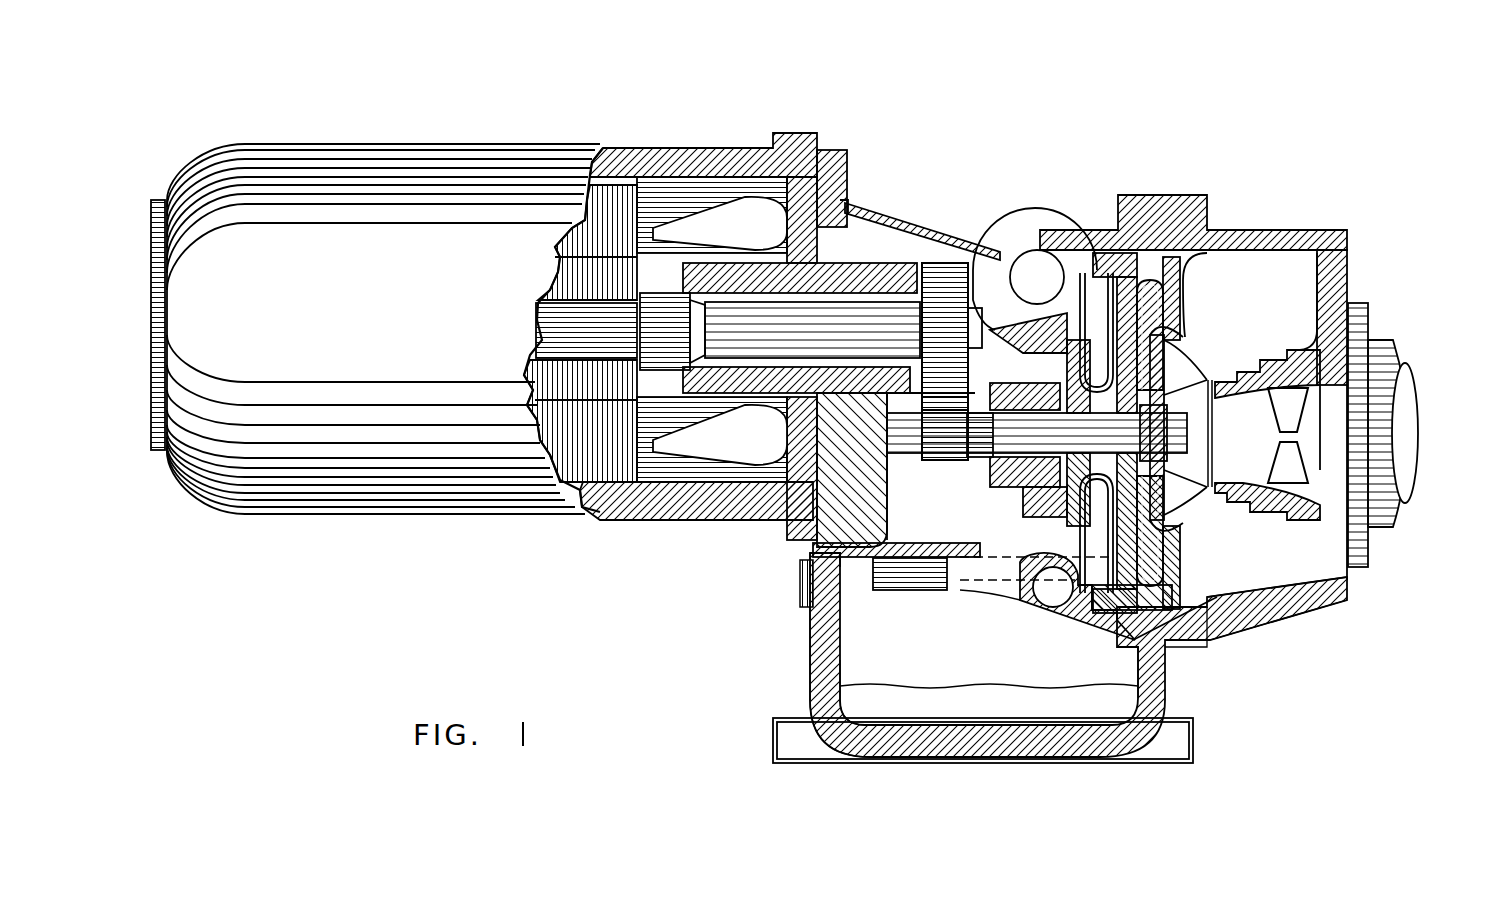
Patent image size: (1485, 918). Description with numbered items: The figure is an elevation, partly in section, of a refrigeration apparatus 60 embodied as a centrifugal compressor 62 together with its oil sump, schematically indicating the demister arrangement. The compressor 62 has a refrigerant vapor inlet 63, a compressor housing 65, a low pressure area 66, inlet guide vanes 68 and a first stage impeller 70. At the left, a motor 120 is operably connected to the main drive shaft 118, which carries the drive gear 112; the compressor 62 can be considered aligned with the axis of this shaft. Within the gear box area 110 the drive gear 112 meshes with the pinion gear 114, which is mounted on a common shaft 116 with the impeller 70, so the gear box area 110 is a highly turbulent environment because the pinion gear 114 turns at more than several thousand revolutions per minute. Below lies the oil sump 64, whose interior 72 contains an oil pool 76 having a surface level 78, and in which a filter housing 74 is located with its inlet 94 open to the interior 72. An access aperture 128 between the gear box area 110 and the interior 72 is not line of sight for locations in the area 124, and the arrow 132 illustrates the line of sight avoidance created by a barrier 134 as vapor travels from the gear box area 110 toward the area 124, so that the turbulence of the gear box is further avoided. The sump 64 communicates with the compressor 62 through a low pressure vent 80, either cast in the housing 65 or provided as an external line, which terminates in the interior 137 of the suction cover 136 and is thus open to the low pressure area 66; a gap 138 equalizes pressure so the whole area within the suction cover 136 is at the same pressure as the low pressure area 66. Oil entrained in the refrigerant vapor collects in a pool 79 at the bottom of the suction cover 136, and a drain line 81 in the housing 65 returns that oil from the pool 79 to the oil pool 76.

The refrigeration apparatus 60 is at (1420, 246).
The centrifugal compressor 62 is at (1272, 222).
The refrigerant vapor inlet 63 is at (1423, 372).
The oil sump 64 is at (808, 635).
The compressor housing 65 is at (1175, 675).
The low pressure area 66 is at (1258, 458).
The inlet guide vanes 68 is at (1310, 457).
The first stage impeller 70 is at (1185, 337).
The interior of the oil sump 72 is at (873, 672).
The filter housing 74 is at (830, 553).
The oil pool 76 is at (970, 722).
The surface level 78 is at (845, 678).
The pool 79 is at (1228, 612).
The low pressure vent 80 is at (1183, 558).
The drain line 81 is at (1132, 643).
The inlet 94 is at (892, 592).
The gear box area 110 is at (988, 353).
The drive gear 112 is at (943, 263).
The pinion gear 114 is at (790, 480).
The common shaft 116 is at (981, 445).
The main drive shaft 118 is at (836, 305).
The motor 120 is at (612, 195).
The area 124 is at (828, 573).
The access aperture 128 is at (955, 607).
The arrow 132 is at (918, 605).
The barrier 134 is at (960, 545).
The suction cover 136 is at (1262, 602).
The interior of the suction cover 137 is at (1285, 562).
The gap 138 is at (1211, 490).